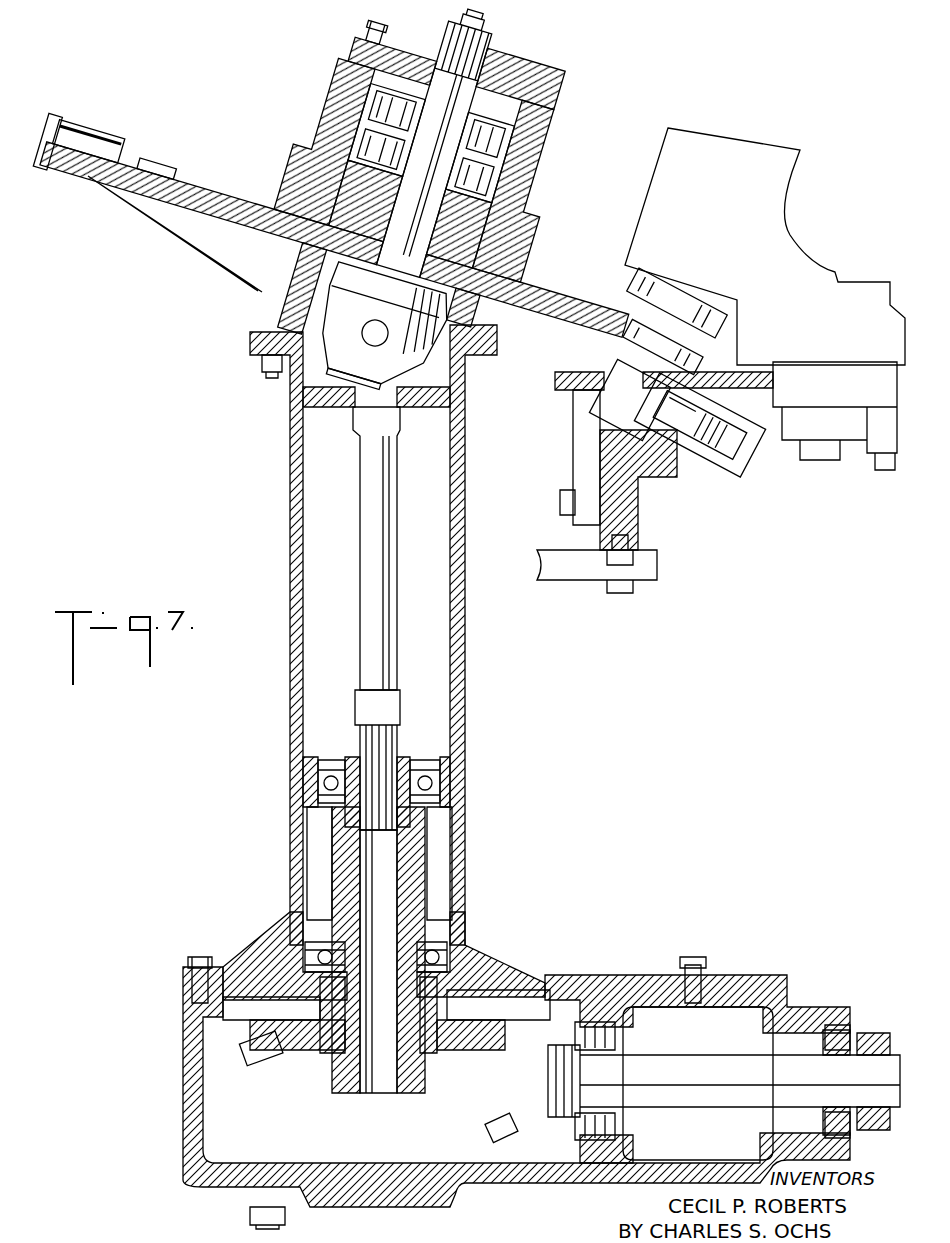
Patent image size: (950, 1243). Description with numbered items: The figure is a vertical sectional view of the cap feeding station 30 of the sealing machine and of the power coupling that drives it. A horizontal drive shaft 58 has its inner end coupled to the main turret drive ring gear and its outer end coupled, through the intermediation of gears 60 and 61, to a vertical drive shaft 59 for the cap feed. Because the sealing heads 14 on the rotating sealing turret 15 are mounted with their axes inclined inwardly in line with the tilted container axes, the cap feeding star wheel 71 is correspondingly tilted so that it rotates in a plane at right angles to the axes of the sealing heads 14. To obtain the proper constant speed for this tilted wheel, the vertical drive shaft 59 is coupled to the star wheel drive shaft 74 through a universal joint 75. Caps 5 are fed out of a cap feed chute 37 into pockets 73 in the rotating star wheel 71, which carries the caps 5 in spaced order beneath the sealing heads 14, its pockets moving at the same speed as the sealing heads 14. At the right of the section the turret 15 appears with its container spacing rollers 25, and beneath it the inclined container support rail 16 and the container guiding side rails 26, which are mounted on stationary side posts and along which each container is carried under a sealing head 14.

The cap 5 is at (703, 342).
The sealing head 14 is at (728, 207).
The sealing turret 15 is at (833, 273).
The container support rail 16 is at (613, 452).
The container spacing roller 25 is at (718, 445).
The container guiding side rail 26 is at (560, 378).
The cap feed 30 is at (566, 118).
The cap feed chute 37 is at (58, 120).
The horizontal drive shaft 58 is at (690, 1073).
The vertical drive shaft 59 is at (390, 622).
The gear 60 is at (498, 1127).
The gear 61 is at (452, 1038).
The cap feeding star wheel 71 is at (558, 293).
The pocket 73 is at (152, 167).
The star wheel drive shaft 74 is at (463, 110).
The universal joint 75 is at (330, 308).